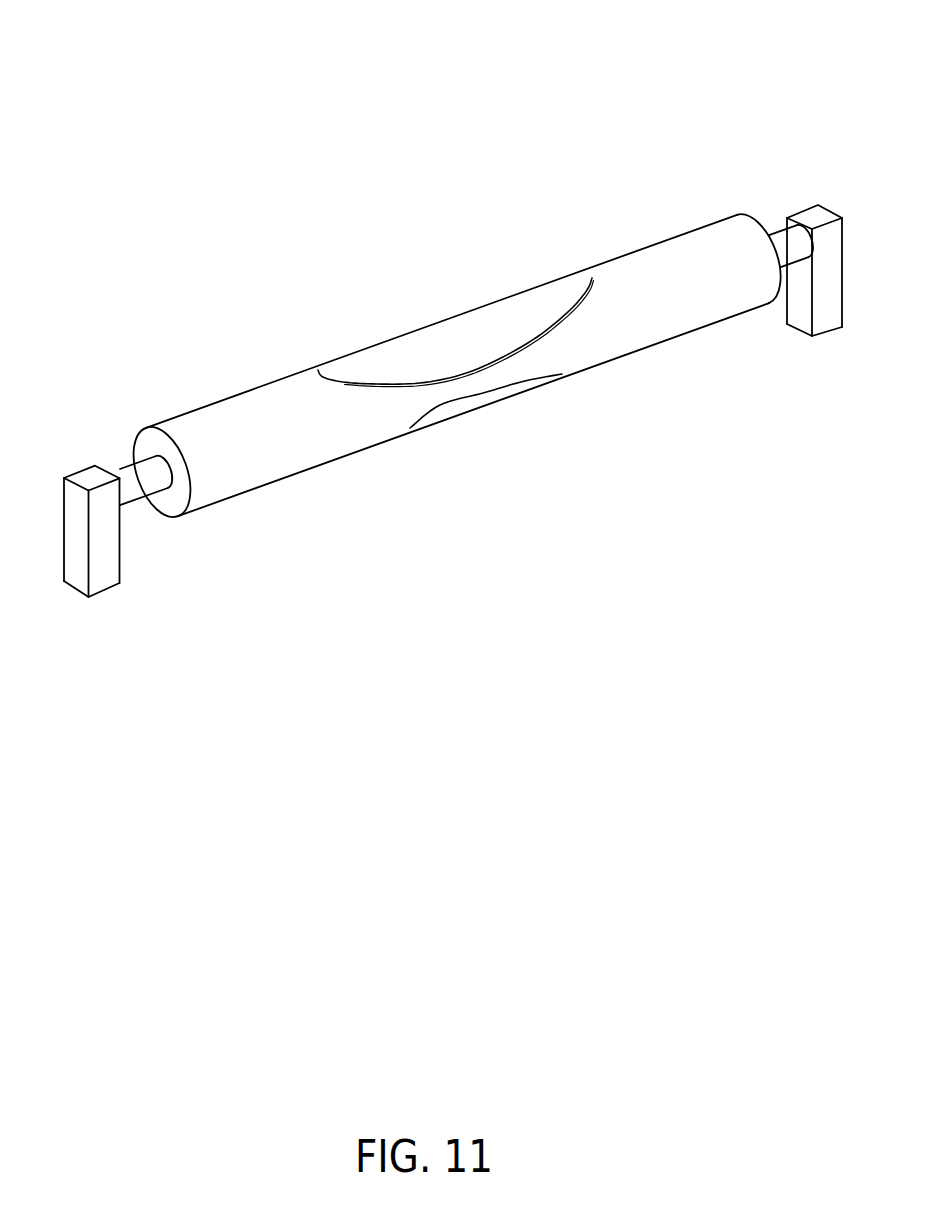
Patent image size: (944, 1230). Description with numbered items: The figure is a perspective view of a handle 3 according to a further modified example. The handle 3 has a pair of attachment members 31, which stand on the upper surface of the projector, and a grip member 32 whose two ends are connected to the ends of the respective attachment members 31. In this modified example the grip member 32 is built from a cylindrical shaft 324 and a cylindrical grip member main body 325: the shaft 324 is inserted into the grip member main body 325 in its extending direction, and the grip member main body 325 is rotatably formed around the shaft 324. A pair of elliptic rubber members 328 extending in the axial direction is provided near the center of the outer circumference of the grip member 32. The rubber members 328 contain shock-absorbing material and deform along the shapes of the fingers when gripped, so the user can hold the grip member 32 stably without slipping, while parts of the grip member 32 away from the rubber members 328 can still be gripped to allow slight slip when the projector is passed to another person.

The handle 3 is at (522, 125).
The grip member 32 is at (402, 235).
The grip member main body 325 is at (328, 448).
The rubber member 328 is at (493, 317).
The shaft 324 is at (127, 496).
The attachment member 31 is at (823, 323).